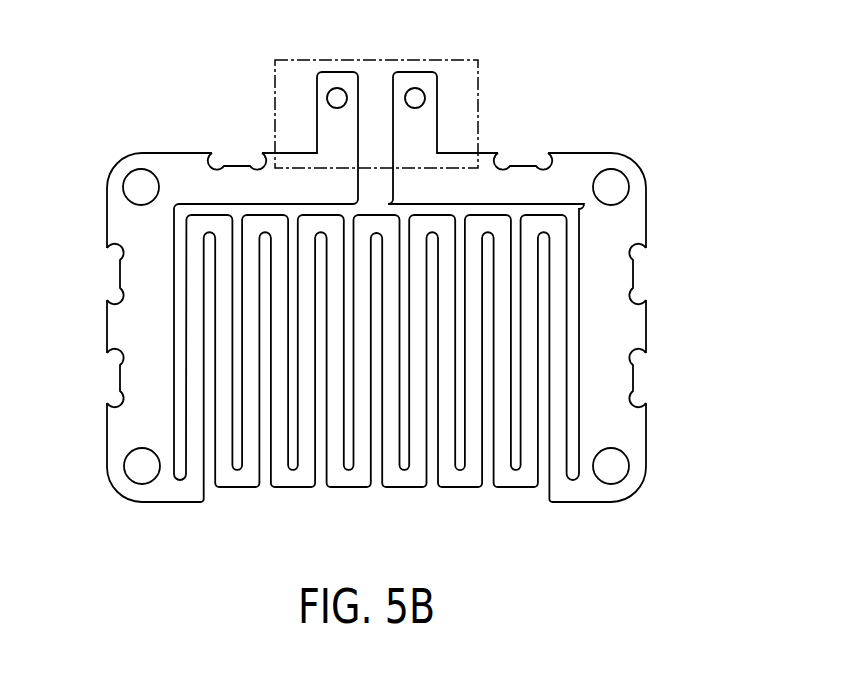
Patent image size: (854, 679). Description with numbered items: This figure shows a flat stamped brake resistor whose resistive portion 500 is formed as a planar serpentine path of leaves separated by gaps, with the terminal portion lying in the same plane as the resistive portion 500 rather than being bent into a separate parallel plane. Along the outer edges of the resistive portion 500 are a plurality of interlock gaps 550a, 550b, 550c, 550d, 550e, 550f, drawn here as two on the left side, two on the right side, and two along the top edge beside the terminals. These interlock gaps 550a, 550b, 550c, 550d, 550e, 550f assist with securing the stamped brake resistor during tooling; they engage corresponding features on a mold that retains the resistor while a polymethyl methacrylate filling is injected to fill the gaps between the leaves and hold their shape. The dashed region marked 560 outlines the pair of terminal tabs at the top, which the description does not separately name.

The resistive portion 500 is at (690, 183).
The terminal tab region 560 is at (471, 57).
The interlock gap 550a is at (118, 282).
The interlock gap 550b is at (118, 383).
The interlock gap 550c is at (232, 158).
The interlock gap 550d is at (510, 157).
The interlock gap 550e is at (643, 267).
The interlock gap 550f is at (643, 380).